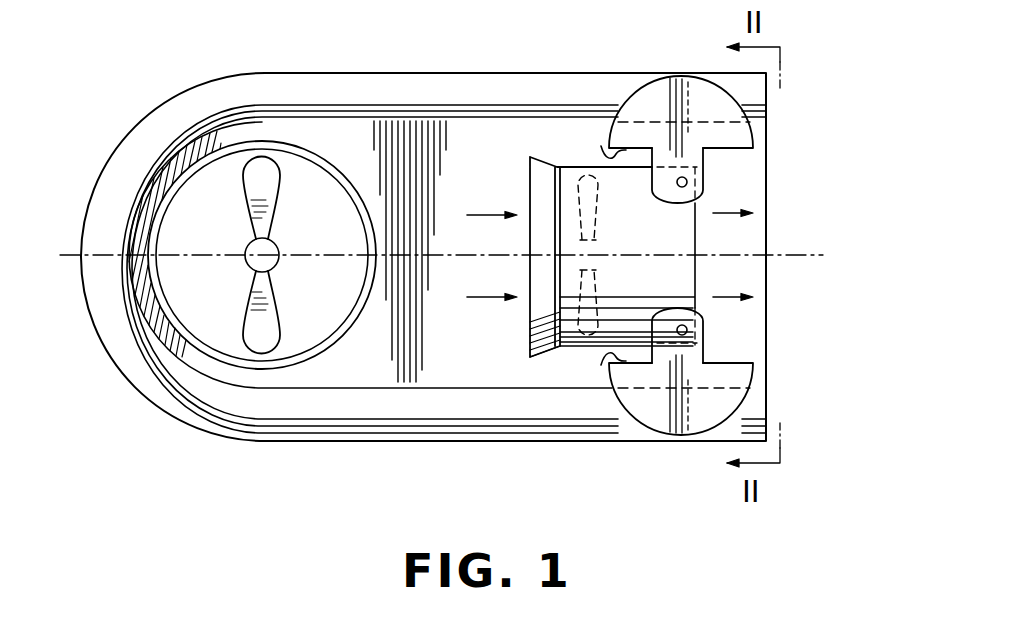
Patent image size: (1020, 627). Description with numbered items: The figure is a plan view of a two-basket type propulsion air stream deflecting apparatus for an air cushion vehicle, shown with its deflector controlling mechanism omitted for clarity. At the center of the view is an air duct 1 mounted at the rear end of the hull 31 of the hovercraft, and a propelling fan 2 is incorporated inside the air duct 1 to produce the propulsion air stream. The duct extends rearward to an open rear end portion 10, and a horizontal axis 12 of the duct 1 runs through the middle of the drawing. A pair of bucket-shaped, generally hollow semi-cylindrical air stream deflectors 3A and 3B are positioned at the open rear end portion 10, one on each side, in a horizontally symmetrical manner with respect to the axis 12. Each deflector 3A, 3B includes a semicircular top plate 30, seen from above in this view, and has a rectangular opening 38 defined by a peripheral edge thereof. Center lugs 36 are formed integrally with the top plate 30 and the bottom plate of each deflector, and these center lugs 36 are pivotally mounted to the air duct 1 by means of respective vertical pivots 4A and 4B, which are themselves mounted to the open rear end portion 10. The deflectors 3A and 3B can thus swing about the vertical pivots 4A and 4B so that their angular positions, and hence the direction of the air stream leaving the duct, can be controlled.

The air duct 1 is at (542, 187).
The propelling fan 2 is at (570, 318).
The air stream deflector 3A is at (748, 137).
The air stream deflector 3B is at (747, 378).
The vertical pivot 4A is at (687, 182).
The vertical pivot 4B is at (687, 330).
The open rear end portion 10 is at (680, 232).
The axis 12 is at (800, 252).
The semicircular top plate 30 is at (658, 93).
The hull 31 is at (393, 378).
The center lug 36 is at (693, 155).
The rectangular opening 38 is at (614, 152).